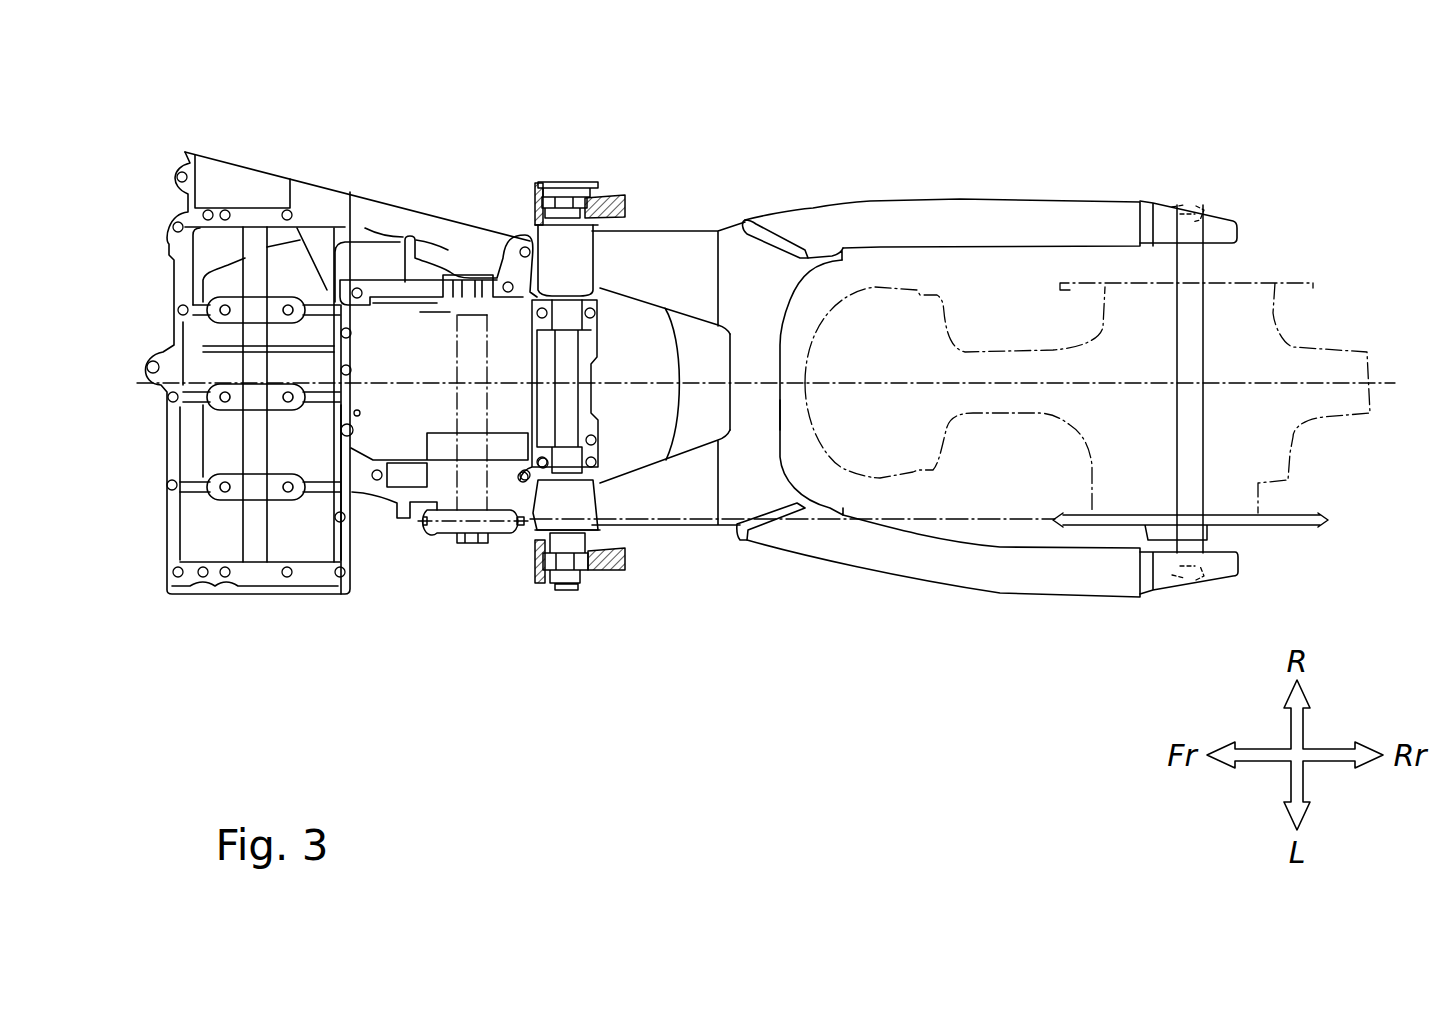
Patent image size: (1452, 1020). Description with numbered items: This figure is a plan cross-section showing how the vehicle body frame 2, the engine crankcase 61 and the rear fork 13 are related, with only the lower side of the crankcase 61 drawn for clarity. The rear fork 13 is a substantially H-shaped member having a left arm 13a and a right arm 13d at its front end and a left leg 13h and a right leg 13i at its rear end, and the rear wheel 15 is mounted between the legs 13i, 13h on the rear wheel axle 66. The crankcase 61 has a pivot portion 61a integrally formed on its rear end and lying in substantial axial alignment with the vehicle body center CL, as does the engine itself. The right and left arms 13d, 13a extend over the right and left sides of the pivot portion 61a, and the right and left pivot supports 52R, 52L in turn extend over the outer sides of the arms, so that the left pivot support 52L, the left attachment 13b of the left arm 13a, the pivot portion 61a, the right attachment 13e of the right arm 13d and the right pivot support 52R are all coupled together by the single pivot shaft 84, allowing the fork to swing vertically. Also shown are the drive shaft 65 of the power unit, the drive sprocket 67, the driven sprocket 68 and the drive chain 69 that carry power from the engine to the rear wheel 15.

The vehicle body frame 2 is at (654, 392).
The rear fork 13 is at (984, 376).
The left arm 13a is at (685, 495).
The left attachment 13b is at (590, 500).
The right arm 13d is at (683, 252).
The right attachment 13e is at (589, 267).
The left leg 13h is at (1112, 578).
The right leg 13i is at (1107, 207).
The rear wheel 15 is at (878, 480).
The right pivot support 52R is at (536, 200).
The left pivot support 52L is at (537, 562).
The crankcase 61 is at (303, 597).
The pivot portion 61a is at (590, 358).
The drive shaft 65 is at (457, 380).
The rear wheel axle 66 is at (1205, 433).
The drive sprocket 67 is at (440, 545).
The driven sprocket 68 is at (1300, 527).
The drive chain 69 is at (953, 520).
The pivot shaft 84 is at (565, 414).
The vehicle body center CL is at (1277, 381).